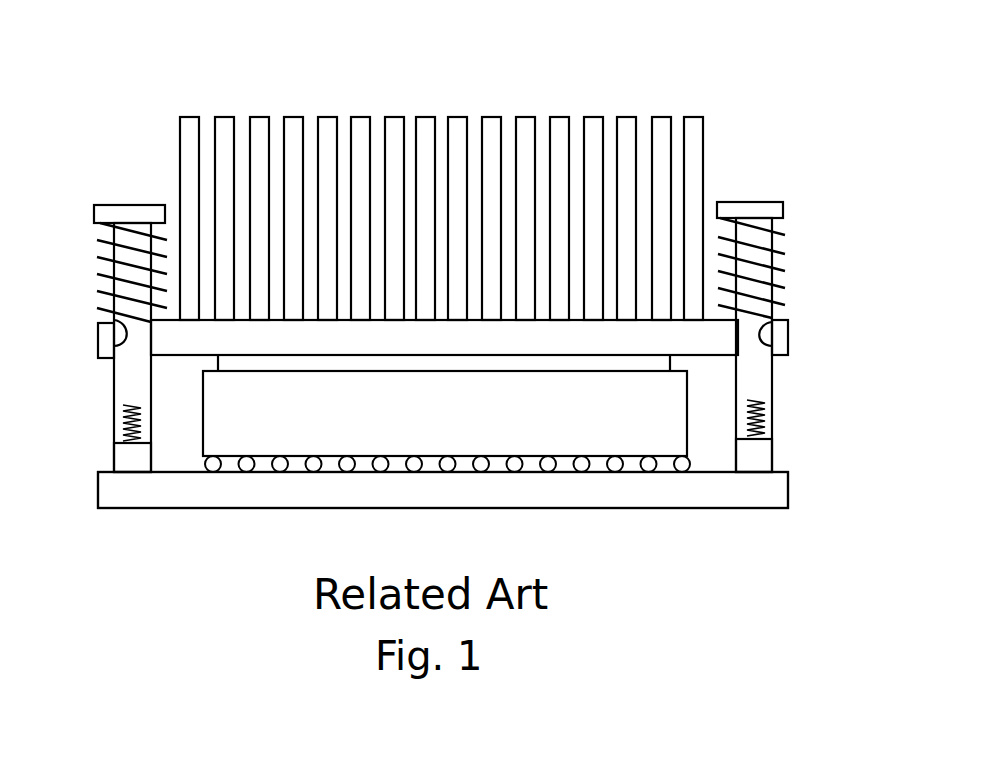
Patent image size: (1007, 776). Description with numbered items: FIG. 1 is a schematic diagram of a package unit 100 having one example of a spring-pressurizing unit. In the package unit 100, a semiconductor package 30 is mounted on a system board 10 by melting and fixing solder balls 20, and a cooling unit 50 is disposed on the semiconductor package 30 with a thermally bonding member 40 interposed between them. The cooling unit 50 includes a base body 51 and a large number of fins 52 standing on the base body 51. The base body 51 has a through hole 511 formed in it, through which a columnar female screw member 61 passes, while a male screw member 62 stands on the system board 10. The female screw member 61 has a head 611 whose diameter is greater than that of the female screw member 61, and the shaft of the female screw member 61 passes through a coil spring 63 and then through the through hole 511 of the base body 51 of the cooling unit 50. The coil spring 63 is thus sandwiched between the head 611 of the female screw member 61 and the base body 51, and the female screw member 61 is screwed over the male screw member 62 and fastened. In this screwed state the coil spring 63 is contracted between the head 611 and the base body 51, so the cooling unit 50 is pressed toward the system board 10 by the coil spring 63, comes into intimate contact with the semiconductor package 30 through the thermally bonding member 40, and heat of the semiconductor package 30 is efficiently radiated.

The package unit 100 is at (724, 60).
The system board 10 is at (777, 490).
The solder balls 20 is at (682, 462).
The semiconductor package 30 is at (682, 404).
The thermally bonding member 40 is at (670, 363).
The cooling unit 50 is at (729, 173).
The base body 51 is at (735, 330).
The fins 52 is at (694, 117).
The through hole 511 is at (112, 318).
The female screw member 61 is at (122, 381).
The head 611 is at (782, 211).
The male screw member 62 is at (106, 490).
The coil spring 63 is at (785, 252).